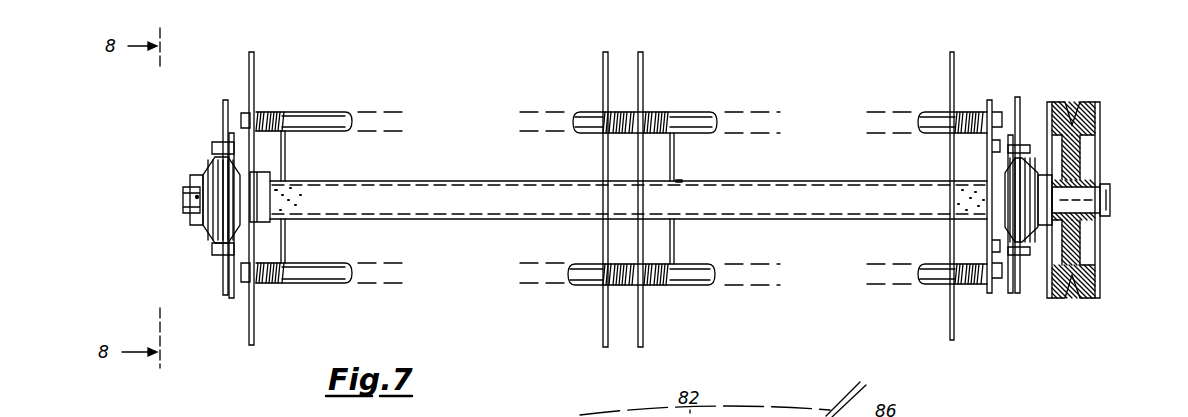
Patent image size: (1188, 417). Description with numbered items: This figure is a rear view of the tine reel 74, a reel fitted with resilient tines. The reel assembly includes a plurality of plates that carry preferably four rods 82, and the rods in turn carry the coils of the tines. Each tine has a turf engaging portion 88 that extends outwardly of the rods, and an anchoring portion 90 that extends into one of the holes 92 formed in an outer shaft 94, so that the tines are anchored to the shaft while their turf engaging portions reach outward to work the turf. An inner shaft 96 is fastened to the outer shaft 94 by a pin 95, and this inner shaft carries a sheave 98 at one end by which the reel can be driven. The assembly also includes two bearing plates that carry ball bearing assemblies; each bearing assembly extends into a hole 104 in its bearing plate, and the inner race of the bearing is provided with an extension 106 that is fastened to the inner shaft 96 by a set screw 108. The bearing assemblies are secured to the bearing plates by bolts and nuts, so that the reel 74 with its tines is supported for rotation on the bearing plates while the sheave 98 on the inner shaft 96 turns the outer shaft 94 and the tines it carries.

The tine reel 74 is at (425, 182).
The rods 82 is at (700, 112).
The turf engaging portions 88 is at (645, 333).
The anchoring portions 90 is at (674, 232).
The holes 92 is at (682, 181).
The outer shaft 94 is at (503, 181).
The pin 95 is at (258, 182).
The inner shaft 96 is at (1110, 193).
The sheave 98 is at (1098, 290).
The hole 104 is at (215, 168).
The extension 106 is at (200, 220).
The set screw 108 is at (190, 198).